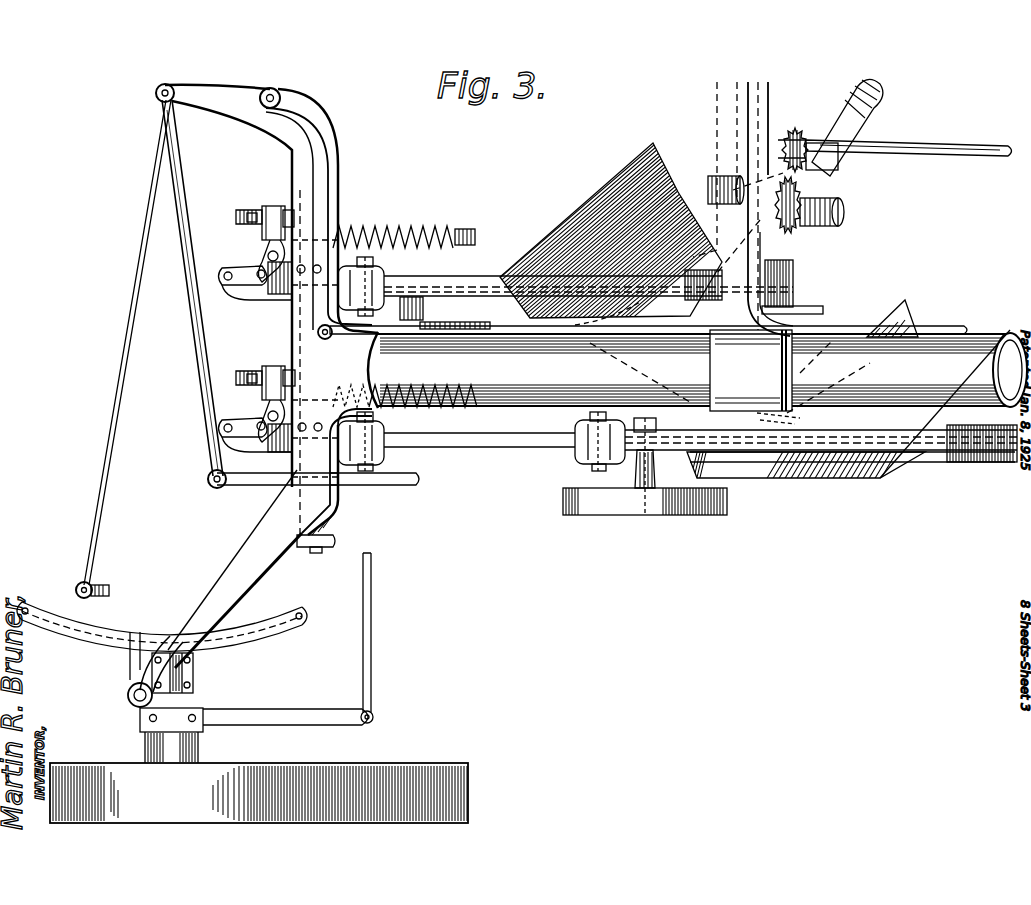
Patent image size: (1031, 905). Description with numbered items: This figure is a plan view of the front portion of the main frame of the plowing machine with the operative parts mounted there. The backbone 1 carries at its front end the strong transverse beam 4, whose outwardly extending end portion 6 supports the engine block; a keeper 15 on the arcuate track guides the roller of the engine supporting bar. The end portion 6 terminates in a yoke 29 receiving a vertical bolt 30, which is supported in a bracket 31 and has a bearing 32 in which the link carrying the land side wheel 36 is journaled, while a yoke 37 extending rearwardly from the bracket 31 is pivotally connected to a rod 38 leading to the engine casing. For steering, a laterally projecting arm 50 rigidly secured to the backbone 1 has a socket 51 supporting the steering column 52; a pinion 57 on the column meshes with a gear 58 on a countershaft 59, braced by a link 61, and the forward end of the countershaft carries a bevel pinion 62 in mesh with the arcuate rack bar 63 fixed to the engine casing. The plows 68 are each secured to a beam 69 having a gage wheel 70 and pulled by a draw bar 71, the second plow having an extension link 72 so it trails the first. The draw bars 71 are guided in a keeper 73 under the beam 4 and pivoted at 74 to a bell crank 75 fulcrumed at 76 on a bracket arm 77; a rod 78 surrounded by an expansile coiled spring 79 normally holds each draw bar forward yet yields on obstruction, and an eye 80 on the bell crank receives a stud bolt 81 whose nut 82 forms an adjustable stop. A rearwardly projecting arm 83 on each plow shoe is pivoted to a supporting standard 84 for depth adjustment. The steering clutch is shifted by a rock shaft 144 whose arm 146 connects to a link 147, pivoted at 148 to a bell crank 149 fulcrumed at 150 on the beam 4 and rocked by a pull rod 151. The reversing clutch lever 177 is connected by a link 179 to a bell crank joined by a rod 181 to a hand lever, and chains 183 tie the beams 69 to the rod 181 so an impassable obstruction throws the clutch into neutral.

The backbone 1 is at (697, 371).
The transverse beam 4 is at (307, 350).
The end portion 6 is at (263, 563).
The keeper 15 is at (227, 633).
The yoke 29 is at (143, 677).
The vertical bolt 30 is at (133, 698).
The bracket 31 is at (204, 733).
The bearing 32 is at (187, 675).
The land side wheel 36 is at (443, 747).
The yoke 37 is at (294, 713).
The rod 38 is at (373, 668).
The laterally projecting arm 50 is at (765, 90).
The socket 51 is at (775, 140).
The steering column 52 is at (927, 150).
The pinion 57 is at (793, 138).
The gear 58 is at (798, 225).
The countershaft 59 is at (843, 207).
The link 61 is at (830, 175).
The bevel pinion 62 is at (715, 178).
The arcuate rack bar 63 is at (720, 112).
The plow 68 is at (590, 207).
The beam 69 is at (547, 280).
The gage wheel 70 is at (413, 328).
The draw bar 71 is at (282, 283).
The extension link 72 is at (508, 447).
The keeper 73 is at (293, 325).
The pivotal connection 74 is at (226, 274).
The bell crank 75 is at (252, 265).
The fulcrum 76 is at (230, 290).
The bracket arm 77 is at (267, 280).
The rod 78 is at (480, 223).
The expansile coiled spring 79 is at (420, 227).
The eye 80 is at (272, 208).
The stud bolt 81 is at (240, 216).
The nut 82 is at (258, 210).
The rearwardly projecting arm 83 is at (823, 310).
The supporting standard 84 is at (795, 280).
The rock shaft 144 is at (422, 481).
The laterally projecting arm 146 is at (358, 480).
The link 147 is at (181, 185).
The pivot 148 is at (160, 89).
The bell crank 149 is at (300, 118).
The fulcrum 150 is at (281, 93).
The pull rod 151 is at (487, 330).
The lever 177 is at (97, 592).
The link 179 is at (96, 512).
The rod 181 is at (957, 313).
The chain 183 is at (704, 364).